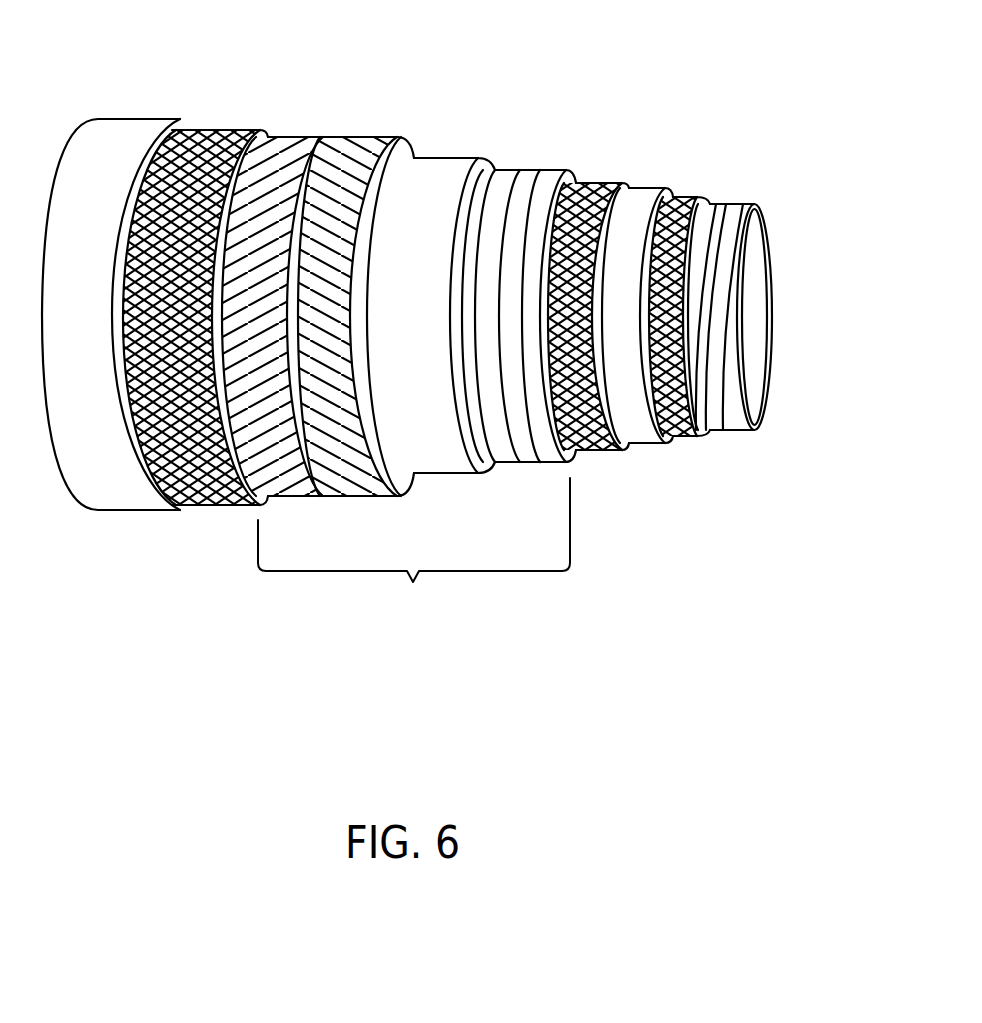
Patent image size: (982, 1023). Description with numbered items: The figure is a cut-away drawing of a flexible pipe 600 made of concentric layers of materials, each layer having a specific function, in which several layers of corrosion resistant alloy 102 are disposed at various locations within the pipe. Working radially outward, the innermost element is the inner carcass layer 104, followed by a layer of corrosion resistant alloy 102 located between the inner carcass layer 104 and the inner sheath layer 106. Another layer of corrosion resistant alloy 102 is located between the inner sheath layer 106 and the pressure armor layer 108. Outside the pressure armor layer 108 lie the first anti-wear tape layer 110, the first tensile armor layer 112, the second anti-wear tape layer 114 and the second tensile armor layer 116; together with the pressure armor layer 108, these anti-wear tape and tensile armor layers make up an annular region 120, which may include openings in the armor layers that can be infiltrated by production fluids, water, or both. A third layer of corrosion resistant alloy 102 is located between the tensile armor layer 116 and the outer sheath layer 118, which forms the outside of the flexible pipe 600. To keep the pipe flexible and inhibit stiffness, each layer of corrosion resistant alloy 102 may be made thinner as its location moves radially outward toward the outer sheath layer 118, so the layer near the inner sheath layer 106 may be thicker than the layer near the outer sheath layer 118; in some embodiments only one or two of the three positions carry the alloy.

The flexible pipe 600 is at (419, 434).
The outer sheath layer 118 is at (117, 512).
The layer of corrosion resistant alloy 102 is at (208, 505).
The second tensile armor layer 116 is at (283, 155).
The second anti-wear tape layer 114 is at (320, 495).
The first tensile armor layer 112 is at (353, 155).
The first anti-wear tape layer 110 is at (436, 478).
The pressure armor layer 108 is at (524, 172).
The inner sheath layer 106 is at (642, 443).
The inner carcass layer 104 is at (728, 432).
The annular region 120 is at (414, 550).